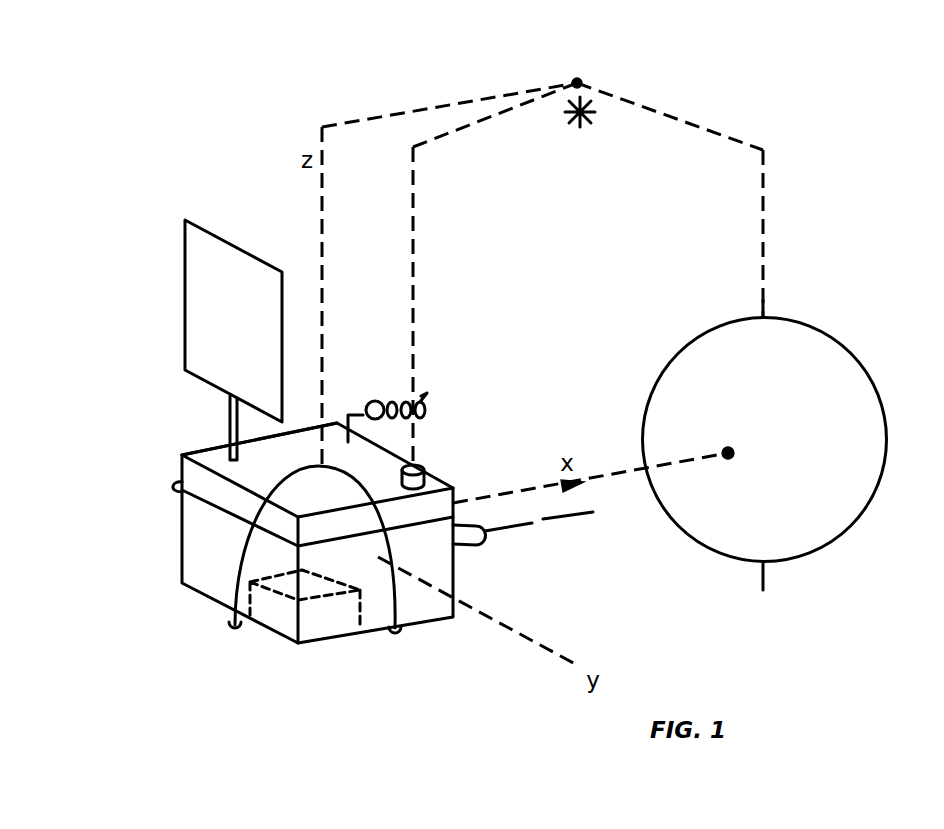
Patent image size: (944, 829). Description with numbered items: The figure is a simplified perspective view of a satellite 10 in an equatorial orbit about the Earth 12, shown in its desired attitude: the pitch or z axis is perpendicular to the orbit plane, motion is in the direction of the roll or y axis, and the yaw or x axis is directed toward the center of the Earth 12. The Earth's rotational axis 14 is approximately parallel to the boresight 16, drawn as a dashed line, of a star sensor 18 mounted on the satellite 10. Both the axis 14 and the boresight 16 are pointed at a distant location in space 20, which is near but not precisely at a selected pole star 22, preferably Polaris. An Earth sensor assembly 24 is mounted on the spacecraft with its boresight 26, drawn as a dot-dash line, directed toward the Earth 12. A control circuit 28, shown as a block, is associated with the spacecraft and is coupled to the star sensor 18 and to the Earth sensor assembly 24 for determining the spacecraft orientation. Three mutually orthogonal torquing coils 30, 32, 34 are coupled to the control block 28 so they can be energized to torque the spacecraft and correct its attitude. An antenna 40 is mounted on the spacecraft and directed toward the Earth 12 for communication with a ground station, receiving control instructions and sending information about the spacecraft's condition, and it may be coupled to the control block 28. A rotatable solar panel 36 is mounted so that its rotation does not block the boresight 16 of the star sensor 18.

The satellite 10 is at (148, 554).
The Earth 12 is at (793, 318).
The Earth's rotational axis 14 is at (763, 305).
The boresight 16 is at (415, 280).
The star sensor 18 is at (427, 468).
The distant location in space 20 is at (583, 81).
The pole star 22 is at (580, 126).
The Earth sensor assembly 24 is at (467, 545).
The boresight 26 is at (537, 523).
The control circuit 28 is at (313, 620).
The torquing coil 30 is at (232, 587).
The torquing coil 32 is at (293, 443).
The torquing coil 34 is at (183, 500).
The rotatable solar panel 36 is at (185, 298).
The antenna 40 is at (372, 408).